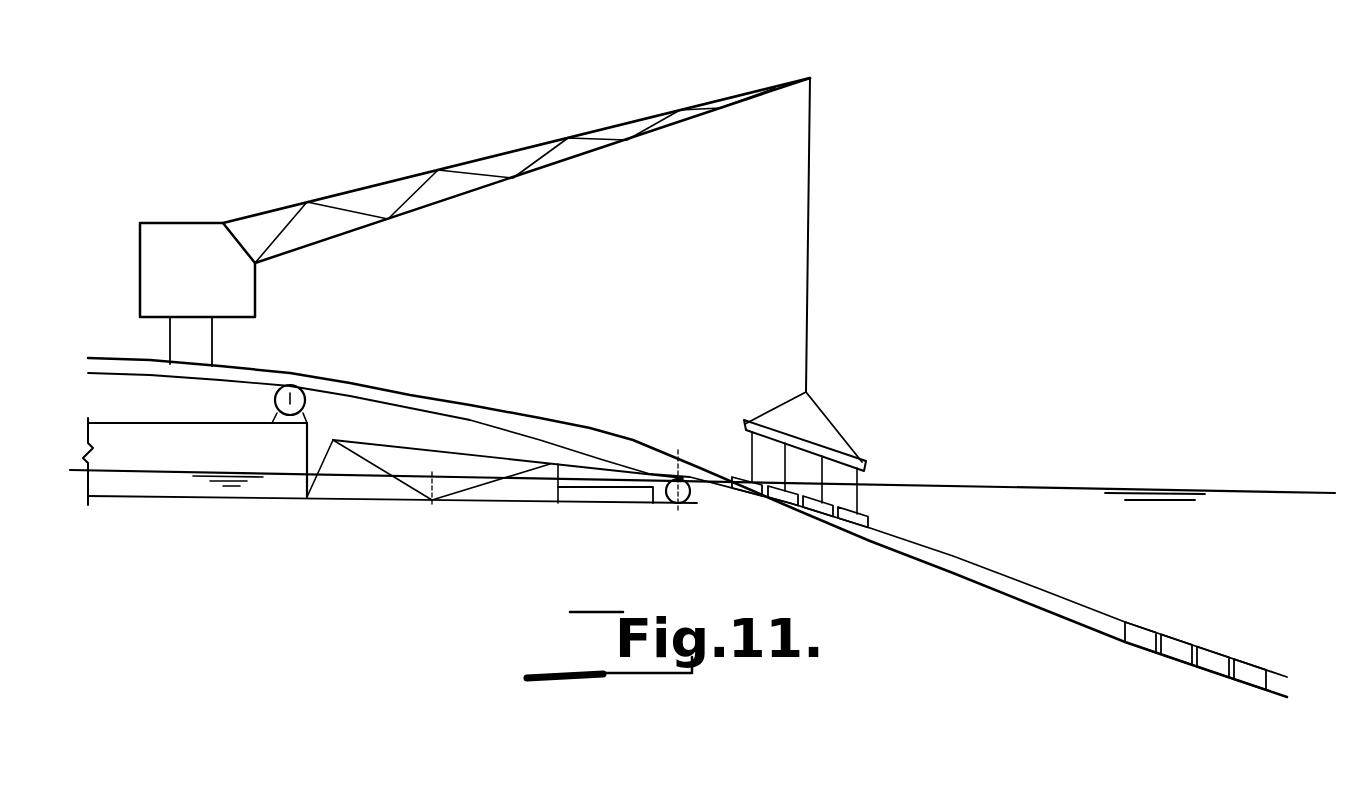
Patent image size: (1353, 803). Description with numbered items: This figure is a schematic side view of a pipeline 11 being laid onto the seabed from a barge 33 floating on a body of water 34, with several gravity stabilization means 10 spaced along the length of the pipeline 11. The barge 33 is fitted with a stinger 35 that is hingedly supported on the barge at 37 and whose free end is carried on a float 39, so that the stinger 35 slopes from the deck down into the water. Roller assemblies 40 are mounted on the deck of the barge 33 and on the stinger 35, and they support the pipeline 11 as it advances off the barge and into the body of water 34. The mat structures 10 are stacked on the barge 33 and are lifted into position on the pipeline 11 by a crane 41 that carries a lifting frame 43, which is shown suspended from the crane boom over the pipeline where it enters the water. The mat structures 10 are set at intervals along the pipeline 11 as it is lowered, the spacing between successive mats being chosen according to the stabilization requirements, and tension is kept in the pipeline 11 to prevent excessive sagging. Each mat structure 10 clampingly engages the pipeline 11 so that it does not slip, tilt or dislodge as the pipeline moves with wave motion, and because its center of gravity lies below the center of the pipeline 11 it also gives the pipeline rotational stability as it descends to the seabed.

The stabilization means 10 is at (1137, 630).
The pipeline 11 is at (866, 516).
The barge 33 is at (120, 436).
The body of water 34 is at (1043, 492).
The stinger 35 is at (466, 452).
The hinge support 37 is at (308, 500).
The float 39 is at (603, 498).
The roller assemblies 40 is at (292, 385).
The crane 41 is at (325, 199).
The lifting frame 43 is at (870, 462).